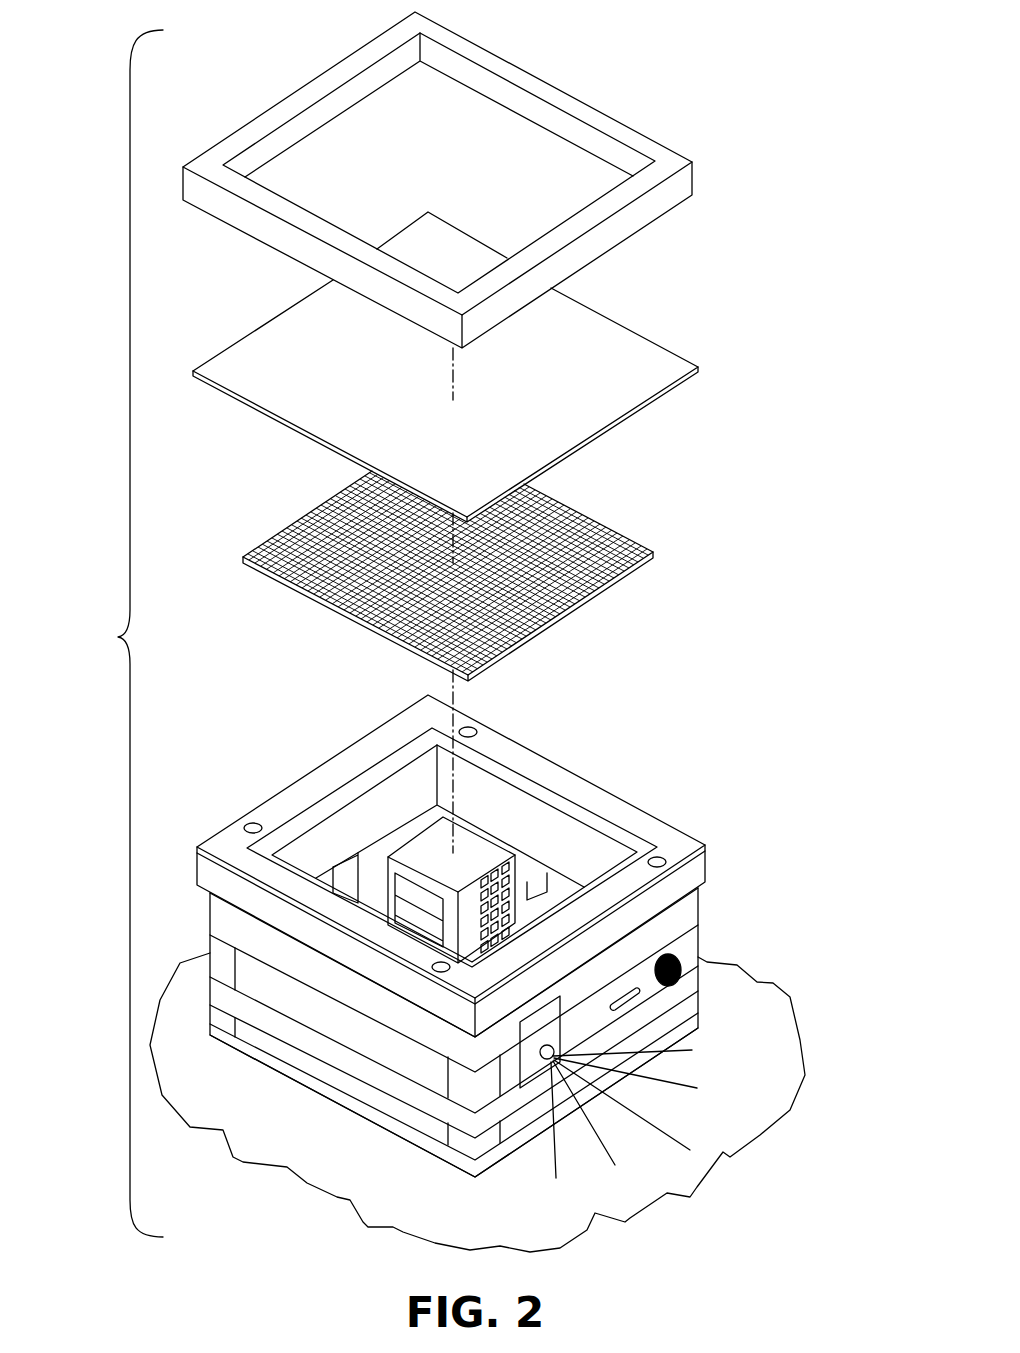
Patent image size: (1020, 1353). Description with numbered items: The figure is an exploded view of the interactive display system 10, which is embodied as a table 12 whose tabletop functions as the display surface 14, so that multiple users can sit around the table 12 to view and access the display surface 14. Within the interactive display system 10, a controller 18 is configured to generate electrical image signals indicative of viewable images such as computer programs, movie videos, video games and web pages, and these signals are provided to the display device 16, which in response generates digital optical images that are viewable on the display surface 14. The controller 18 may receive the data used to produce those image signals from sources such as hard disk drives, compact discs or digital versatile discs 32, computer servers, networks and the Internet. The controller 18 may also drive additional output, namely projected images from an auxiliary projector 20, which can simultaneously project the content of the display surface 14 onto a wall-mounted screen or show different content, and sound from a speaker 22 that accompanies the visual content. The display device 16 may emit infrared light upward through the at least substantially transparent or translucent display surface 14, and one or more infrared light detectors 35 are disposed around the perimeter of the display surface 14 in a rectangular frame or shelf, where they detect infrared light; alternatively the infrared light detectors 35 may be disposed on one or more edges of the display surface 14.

The interactive display system 10 is at (118, 637).
The table 12 is at (487, 953).
The display surface 14 is at (685, 381).
The display device 16 is at (619, 523).
The controller 18 is at (477, 823).
The projector 20 is at (528, 1093).
The speaker 22 is at (679, 951).
The compact discs or digital versatile discs 32 is at (633, 1003).
The infrared light detectors 35 is at (692, 178).